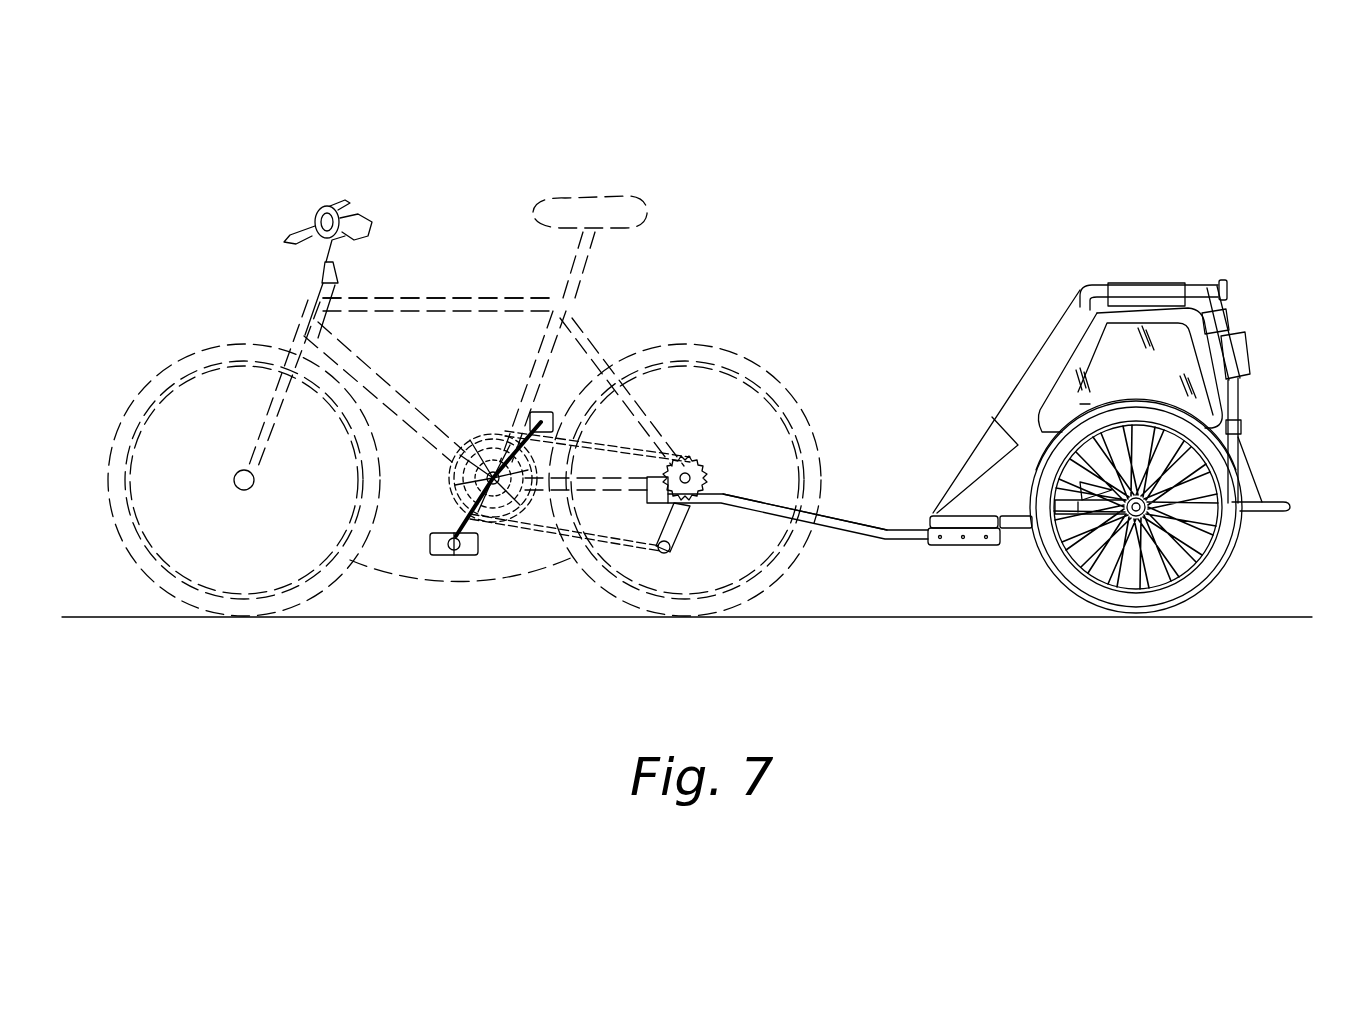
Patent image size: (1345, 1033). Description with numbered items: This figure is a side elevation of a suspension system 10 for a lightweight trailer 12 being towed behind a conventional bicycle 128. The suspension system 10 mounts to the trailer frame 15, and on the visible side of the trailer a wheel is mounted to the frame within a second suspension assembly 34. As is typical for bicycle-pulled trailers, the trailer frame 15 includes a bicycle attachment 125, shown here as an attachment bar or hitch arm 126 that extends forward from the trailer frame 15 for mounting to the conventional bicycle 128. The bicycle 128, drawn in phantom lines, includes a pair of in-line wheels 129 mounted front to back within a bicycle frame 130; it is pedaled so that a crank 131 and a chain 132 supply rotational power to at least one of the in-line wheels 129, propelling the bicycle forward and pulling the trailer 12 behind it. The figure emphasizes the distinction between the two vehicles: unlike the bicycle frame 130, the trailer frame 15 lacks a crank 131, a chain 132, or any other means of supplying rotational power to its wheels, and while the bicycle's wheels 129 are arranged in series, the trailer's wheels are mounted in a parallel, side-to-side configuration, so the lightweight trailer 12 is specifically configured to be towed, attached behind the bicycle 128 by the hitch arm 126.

The suspension system 10 is at (1243, 543).
The lightweight trailer 12 is at (1010, 273).
The trailer frame 15 is at (937, 522).
The second suspension assembly 34 is at (1020, 553).
The bicycle attachment 125 is at (827, 539).
The hitch arm 126 is at (848, 515).
The conventional bicycle 128 is at (514, 186).
The in-line wheels 129 is at (465, 556).
The bicycle frame 130 is at (406, 296).
The crank 131 is at (486, 440).
The chain 132 is at (660, 420).